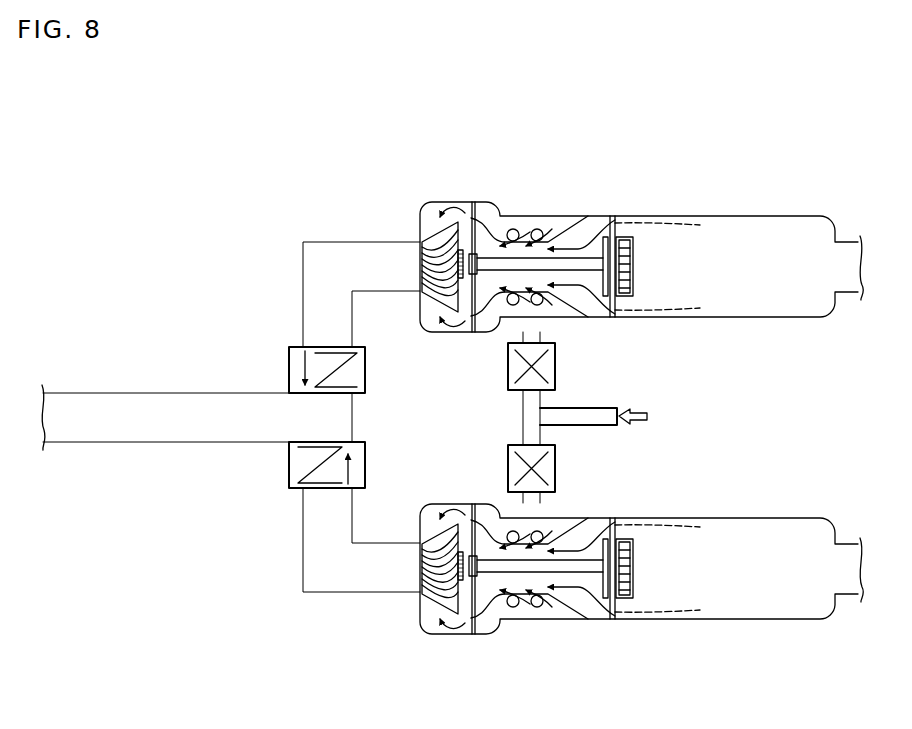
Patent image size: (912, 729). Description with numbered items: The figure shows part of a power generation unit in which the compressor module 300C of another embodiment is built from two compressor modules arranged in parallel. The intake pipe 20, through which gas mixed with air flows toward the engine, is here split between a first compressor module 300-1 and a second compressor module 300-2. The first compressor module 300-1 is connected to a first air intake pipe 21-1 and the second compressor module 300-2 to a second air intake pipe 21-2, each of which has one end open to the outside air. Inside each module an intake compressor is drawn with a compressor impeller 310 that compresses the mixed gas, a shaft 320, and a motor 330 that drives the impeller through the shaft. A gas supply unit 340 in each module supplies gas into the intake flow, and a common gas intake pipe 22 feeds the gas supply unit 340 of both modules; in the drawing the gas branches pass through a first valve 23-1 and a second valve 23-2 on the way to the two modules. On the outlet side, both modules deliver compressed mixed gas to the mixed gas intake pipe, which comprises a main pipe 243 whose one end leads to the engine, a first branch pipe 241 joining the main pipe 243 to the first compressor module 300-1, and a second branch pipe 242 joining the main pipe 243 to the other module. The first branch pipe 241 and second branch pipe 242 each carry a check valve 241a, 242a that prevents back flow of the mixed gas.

The compressor module 300C is at (136, 158).
The intake pipe 20 is at (55, 592).
The first branch pipe 241 is at (324, 240).
The second branch pipe 242 is at (332, 595).
The main pipe 243 is at (127, 391).
The check valve 241a is at (366, 370).
The check valve 242a is at (366, 464).
The first compressor module 300-1 is at (426, 324).
The second compressor module 300-2 is at (428, 633).
The compressor impeller 310 is at (428, 222).
The shaft 320 is at (577, 261).
The motor 330 is at (621, 245).
The gas supply unit 340 is at (555, 228).
The first air intake pipe 21-1 is at (772, 216).
The second air intake pipe 21-2 is at (772, 620).
The gas intake pipe 22 is at (598, 408).
The first gas valve 23-1 is at (557, 352).
The second gas valve 23-2 is at (557, 464).